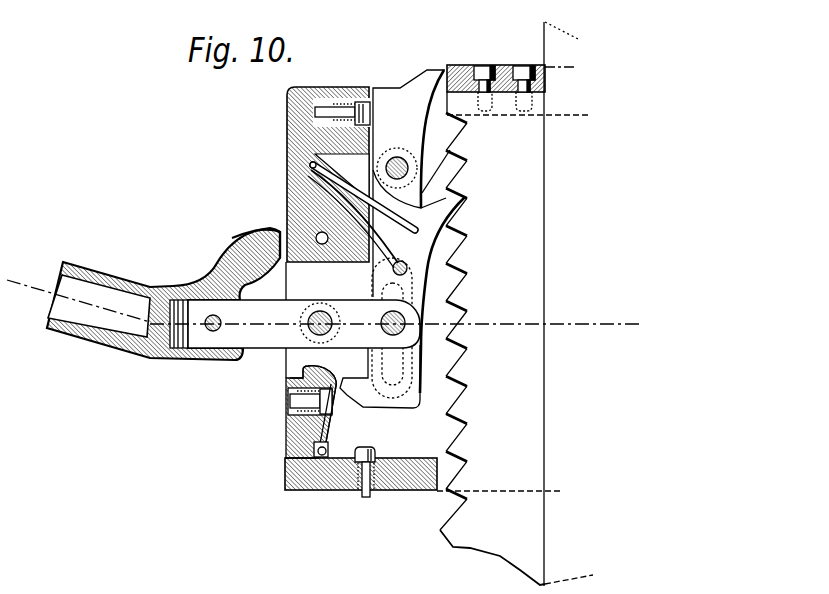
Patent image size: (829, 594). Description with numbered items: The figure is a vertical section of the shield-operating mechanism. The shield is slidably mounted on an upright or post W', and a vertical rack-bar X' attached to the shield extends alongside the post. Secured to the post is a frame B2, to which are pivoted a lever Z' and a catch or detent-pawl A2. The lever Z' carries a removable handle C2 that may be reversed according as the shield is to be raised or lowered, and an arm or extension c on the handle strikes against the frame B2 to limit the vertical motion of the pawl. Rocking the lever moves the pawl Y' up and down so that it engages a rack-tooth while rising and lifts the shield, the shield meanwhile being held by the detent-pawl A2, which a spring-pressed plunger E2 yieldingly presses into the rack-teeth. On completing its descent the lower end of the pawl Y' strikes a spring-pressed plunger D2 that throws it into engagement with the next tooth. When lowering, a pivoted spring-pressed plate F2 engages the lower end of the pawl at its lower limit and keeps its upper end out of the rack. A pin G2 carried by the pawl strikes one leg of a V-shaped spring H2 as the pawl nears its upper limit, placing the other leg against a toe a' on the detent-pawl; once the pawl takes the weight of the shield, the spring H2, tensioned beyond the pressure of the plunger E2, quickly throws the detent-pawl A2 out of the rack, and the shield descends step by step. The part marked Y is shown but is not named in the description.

The detent-pawl A2 is at (408, 139).
The toe a' is at (436, 179).
The frame B2 is at (291, 188).
The arm or extension c is at (258, 242).
The removable handle C2 is at (141, 285).
The spring-pressed plunger D2 is at (363, 448).
The spring-pressed plunger E2 is at (362, 97).
The pivoted spring-pressed plate F2 is at (302, 374).
The pin G2 is at (392, 272).
The V-shaped spring H2 is at (416, 224).
The rack-bar X' is at (515, 325).
The link Y is at (380, 301).
The pawl Y' is at (455, 295).
The lever Z' is at (304, 324).
The upright or post W' is at (564, 304).